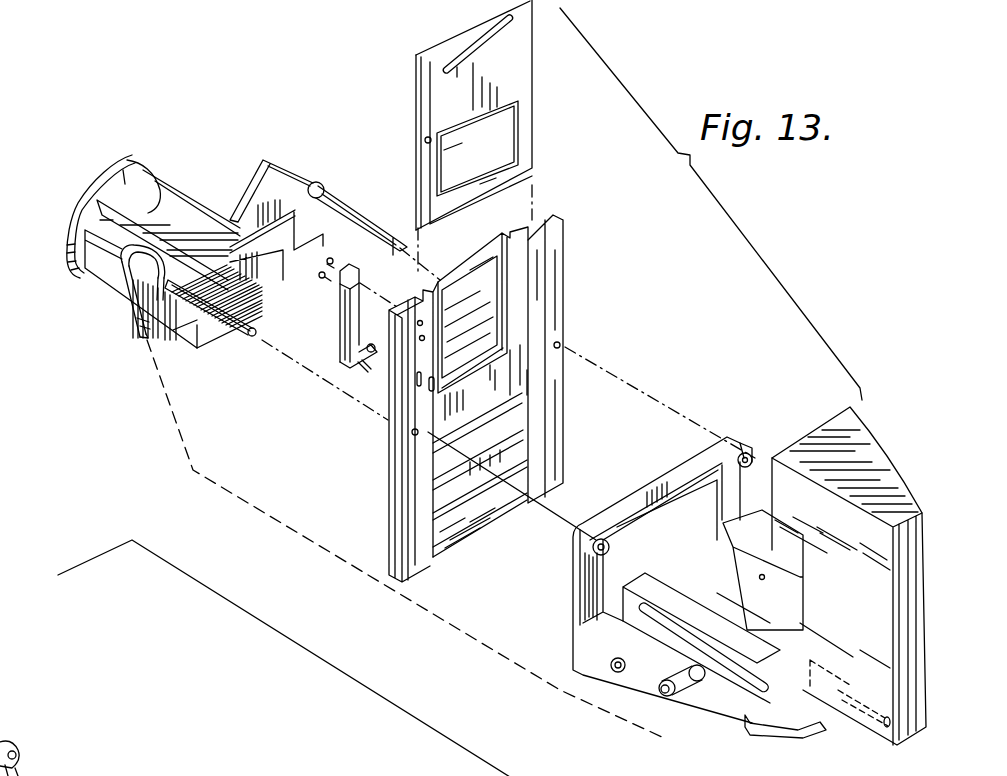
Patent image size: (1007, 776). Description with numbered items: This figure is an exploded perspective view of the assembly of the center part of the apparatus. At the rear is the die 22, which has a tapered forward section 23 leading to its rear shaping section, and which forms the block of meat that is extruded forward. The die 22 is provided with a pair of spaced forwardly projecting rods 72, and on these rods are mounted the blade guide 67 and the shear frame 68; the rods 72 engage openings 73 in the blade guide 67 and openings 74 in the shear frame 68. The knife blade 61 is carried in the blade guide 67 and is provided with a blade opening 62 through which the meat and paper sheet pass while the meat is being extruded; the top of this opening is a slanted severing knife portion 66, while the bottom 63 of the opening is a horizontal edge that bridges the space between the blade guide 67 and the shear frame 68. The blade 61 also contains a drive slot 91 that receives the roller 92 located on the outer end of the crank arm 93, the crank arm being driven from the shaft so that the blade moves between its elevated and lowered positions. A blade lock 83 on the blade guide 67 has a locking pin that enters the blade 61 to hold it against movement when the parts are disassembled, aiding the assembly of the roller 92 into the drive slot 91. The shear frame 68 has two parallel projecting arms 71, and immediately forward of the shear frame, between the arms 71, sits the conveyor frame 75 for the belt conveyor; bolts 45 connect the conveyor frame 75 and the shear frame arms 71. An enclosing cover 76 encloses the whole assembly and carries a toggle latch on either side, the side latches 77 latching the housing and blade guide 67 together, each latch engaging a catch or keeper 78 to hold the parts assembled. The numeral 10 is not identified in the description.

The tool 10 is at (284, 658).
The die 22 is at (94, 289).
The tapered forward section 23 is at (126, 176).
The bolts 45 is at (655, 690).
The knife blade 61 is at (466, 107).
The blade opening 62 is at (512, 136).
The bottom of blade opening 63 is at (486, 183).
The slanted severing knife portion 66 is at (466, 152).
The blade guide 67 is at (558, 398).
The shear frame 68 is at (565, 646).
The projecting arms 71 is at (724, 580).
The forwardly projecting rods 72 is at (240, 332).
The openings in blade guide 73 is at (415, 435).
The openings in shear frame 74 is at (751, 453).
The conveyor frame 75 is at (650, 582).
The enclosing cover 76 is at (858, 478).
The side latches 77 is at (762, 731).
The keeper 78 is at (143, 332).
The blade lock 83 is at (334, 340).
The drive slot 91 is at (482, 34).
The roller 92 is at (3, 742).
The crank arm 93 is at (20, 774).